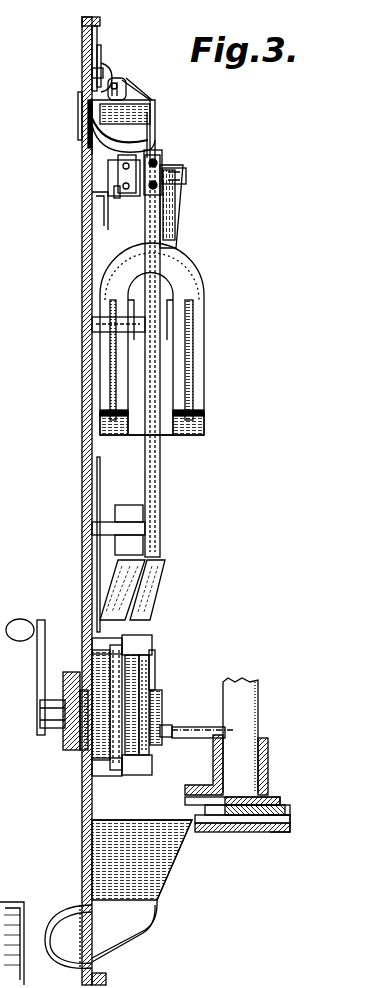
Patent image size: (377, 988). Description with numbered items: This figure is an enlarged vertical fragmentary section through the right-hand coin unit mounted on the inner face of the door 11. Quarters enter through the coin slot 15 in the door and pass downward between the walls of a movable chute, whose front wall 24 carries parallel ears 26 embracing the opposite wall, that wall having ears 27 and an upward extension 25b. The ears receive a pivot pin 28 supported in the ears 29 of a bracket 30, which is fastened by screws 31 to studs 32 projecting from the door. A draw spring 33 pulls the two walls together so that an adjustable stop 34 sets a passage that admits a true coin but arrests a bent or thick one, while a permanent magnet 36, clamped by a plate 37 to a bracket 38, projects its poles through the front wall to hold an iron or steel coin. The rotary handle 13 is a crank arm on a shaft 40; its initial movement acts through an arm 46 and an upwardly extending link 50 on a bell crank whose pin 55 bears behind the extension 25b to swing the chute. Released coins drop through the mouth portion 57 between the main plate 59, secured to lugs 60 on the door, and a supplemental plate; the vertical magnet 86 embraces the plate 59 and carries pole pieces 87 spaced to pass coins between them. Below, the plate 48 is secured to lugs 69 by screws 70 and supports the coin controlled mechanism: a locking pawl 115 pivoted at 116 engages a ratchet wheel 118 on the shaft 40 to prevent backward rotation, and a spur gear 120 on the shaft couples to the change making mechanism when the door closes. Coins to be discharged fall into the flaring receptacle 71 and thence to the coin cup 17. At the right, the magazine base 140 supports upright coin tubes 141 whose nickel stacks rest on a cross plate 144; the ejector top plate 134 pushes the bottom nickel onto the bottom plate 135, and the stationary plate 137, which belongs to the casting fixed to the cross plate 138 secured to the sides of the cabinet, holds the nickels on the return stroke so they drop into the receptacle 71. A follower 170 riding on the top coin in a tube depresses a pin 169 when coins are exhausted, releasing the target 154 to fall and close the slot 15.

The door 11 is at (82, 47).
The rotary handle 13 is at (30, 620).
The coin slot 15 is at (78, 108).
The coin cup 17 is at (66, 940).
The front wall 24 is at (88, 130).
The upward extension 25b is at (153, 134).
The ears 26 is at (155, 118).
The ears 27 is at (150, 100).
The pivot pin 28 is at (128, 88).
The ears 29 is at (126, 92).
The bracket 30 is at (101, 62).
The screws 31 is at (108, 78).
The studs 32 is at (92, 72).
The draw spring 33 is at (156, 163).
The adjustable stop 34 is at (160, 190).
The permanent magnet 36 is at (118, 198).
The plate 37 is at (112, 192).
The bracket 38 is at (108, 180).
The shaft 40 is at (62, 735).
The arm 46 is at (98, 755).
The plate 48 is at (110, 770).
The link 50 is at (97, 580).
The pin 55 is at (130, 140).
The mouth portion 57 is at (176, 216).
The plate 59 is at (145, 468).
The lugs 60 is at (92, 320).
The lugs 69 is at (92, 645).
The screws 70 is at (152, 640).
The flaring receptacle 71 is at (170, 872).
The magnet 86 is at (204, 322).
The pole pieces 87 is at (176, 400).
The locking pawl 115 is at (152, 675).
The pivot 116 is at (150, 662).
The ratchet wheel 118 is at (152, 705).
The spur gear 120 is at (158, 690).
The top plate 134 is at (280, 800).
The bottom plate 135 is at (248, 832).
The stationary plate 137 is at (272, 826).
The plate 138 is at (222, 823).
The base 140 is at (268, 770).
The coin tube 141 is at (258, 692).
The cross plate 144 is at (289, 807).
The target 154 is at (97, 38).
The pin 169 is at (172, 740).
The follower 170 is at (200, 728).